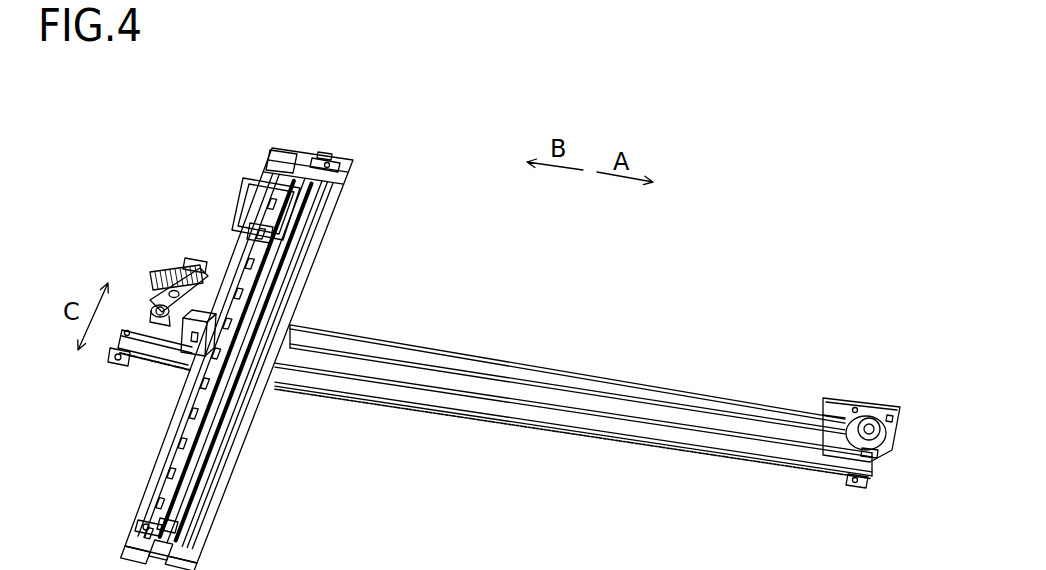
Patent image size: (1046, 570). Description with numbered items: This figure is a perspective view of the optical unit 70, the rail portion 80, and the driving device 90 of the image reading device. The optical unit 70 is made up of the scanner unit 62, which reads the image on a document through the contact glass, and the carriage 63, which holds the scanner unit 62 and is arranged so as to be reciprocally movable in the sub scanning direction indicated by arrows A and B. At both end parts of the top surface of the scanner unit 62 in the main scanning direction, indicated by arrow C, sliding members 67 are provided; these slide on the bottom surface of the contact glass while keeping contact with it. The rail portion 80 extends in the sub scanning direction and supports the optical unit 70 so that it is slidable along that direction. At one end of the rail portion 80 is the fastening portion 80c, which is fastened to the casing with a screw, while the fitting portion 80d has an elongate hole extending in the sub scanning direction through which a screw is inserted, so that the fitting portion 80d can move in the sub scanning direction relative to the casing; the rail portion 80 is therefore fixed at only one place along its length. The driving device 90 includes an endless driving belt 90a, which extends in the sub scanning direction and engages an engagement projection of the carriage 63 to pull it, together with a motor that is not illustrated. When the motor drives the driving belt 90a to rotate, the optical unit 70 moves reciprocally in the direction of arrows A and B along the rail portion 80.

The optical unit 70 is at (383, 169).
The scanner unit 62 is at (308, 236).
The carriage 63 is at (305, 292).
The sliding members 67 is at (326, 160).
The rail portion 80 is at (638, 440).
The fastening portion 80c is at (119, 366).
The fitting portion 80d is at (853, 488).
The driving device 90 is at (816, 378).
The driving belt 90a is at (643, 383).